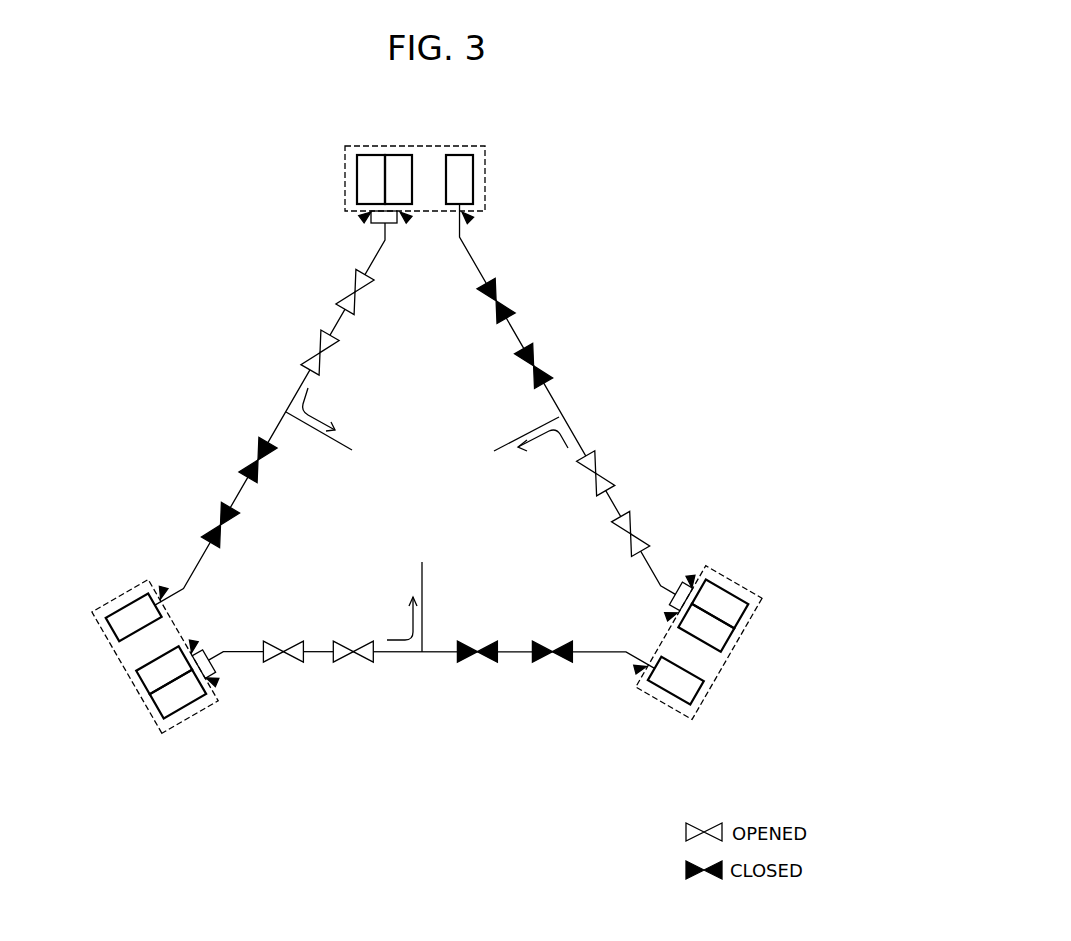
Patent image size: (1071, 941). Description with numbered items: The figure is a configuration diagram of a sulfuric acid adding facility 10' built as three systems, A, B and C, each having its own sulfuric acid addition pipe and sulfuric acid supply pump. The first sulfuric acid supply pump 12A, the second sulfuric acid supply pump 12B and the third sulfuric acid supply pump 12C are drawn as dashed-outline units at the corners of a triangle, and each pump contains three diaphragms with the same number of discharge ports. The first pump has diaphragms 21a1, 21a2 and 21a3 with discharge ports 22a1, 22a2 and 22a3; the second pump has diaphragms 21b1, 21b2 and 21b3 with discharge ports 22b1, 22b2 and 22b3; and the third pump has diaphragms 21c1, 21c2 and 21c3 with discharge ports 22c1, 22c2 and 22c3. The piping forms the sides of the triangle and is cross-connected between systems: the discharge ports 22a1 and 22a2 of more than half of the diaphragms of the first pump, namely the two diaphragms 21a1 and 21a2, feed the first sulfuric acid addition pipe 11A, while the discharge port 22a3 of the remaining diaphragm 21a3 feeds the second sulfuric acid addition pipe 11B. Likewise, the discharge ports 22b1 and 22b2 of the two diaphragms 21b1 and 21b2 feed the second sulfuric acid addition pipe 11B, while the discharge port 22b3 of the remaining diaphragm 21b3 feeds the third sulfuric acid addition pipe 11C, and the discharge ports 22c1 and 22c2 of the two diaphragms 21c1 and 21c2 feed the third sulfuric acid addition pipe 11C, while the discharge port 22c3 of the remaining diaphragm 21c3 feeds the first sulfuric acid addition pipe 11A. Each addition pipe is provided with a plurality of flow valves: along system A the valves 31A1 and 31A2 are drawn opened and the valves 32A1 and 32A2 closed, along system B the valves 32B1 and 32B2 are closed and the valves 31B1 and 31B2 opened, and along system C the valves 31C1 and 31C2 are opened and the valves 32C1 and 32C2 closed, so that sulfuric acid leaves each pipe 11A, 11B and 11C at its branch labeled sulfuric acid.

The sulfuric acid adding facility 10' is at (473, 531).
The first sulfuric acid supply pump 12A is at (486, 178).
The second sulfuric acid supply pump 12B is at (653, 700).
The third sulfuric acid supply pump 12C is at (198, 711).
The diaphragm 21a1 is at (373, 154).
The diaphragm 21a2 is at (397, 155).
The diaphragm 21a3 is at (458, 155).
The diaphragm 21b1 is at (745, 618).
The diaphragm 21b2 is at (730, 640).
The diaphragm 21b3 is at (697, 697).
The diaphragm 21c1 is at (148, 708).
The diaphragm 21c2 is at (135, 683).
The diaphragm 21c3 is at (102, 630).
The discharge port 22a1 is at (361, 220).
The discharge port 22a2 is at (407, 225).
The discharge port 22a3 is at (473, 226).
The discharge port 22b1 is at (632, 668).
The discharge port 22b2 is at (663, 617).
The discharge port 22b3 is at (690, 572).
The discharge port 22c1 is at (220, 682).
The discharge port 22c2 is at (190, 640).
The discharge port 22c3 is at (162, 584).
The first sulfuric acid addition pipe 11A is at (308, 428).
The second sulfuric acid addition pipe 11B is at (527, 430).
The third sulfuric acid addition pipe 11C is at (423, 582).
The valve 31A1 is at (343, 296).
The valve 31A2 is at (308, 356).
The valve 31B1 is at (630, 443).
The valve 31B2 is at (667, 502).
The valve 31C1 is at (280, 638).
The valve 31C2 is at (355, 638).
The valve 32A1 is at (250, 454).
The valve 32A2 is at (212, 527).
The valve 32B1 is at (508, 302).
The valve 32B2 is at (547, 366).
The valve 32C1 is at (475, 638).
The valve 32C2 is at (547, 638).